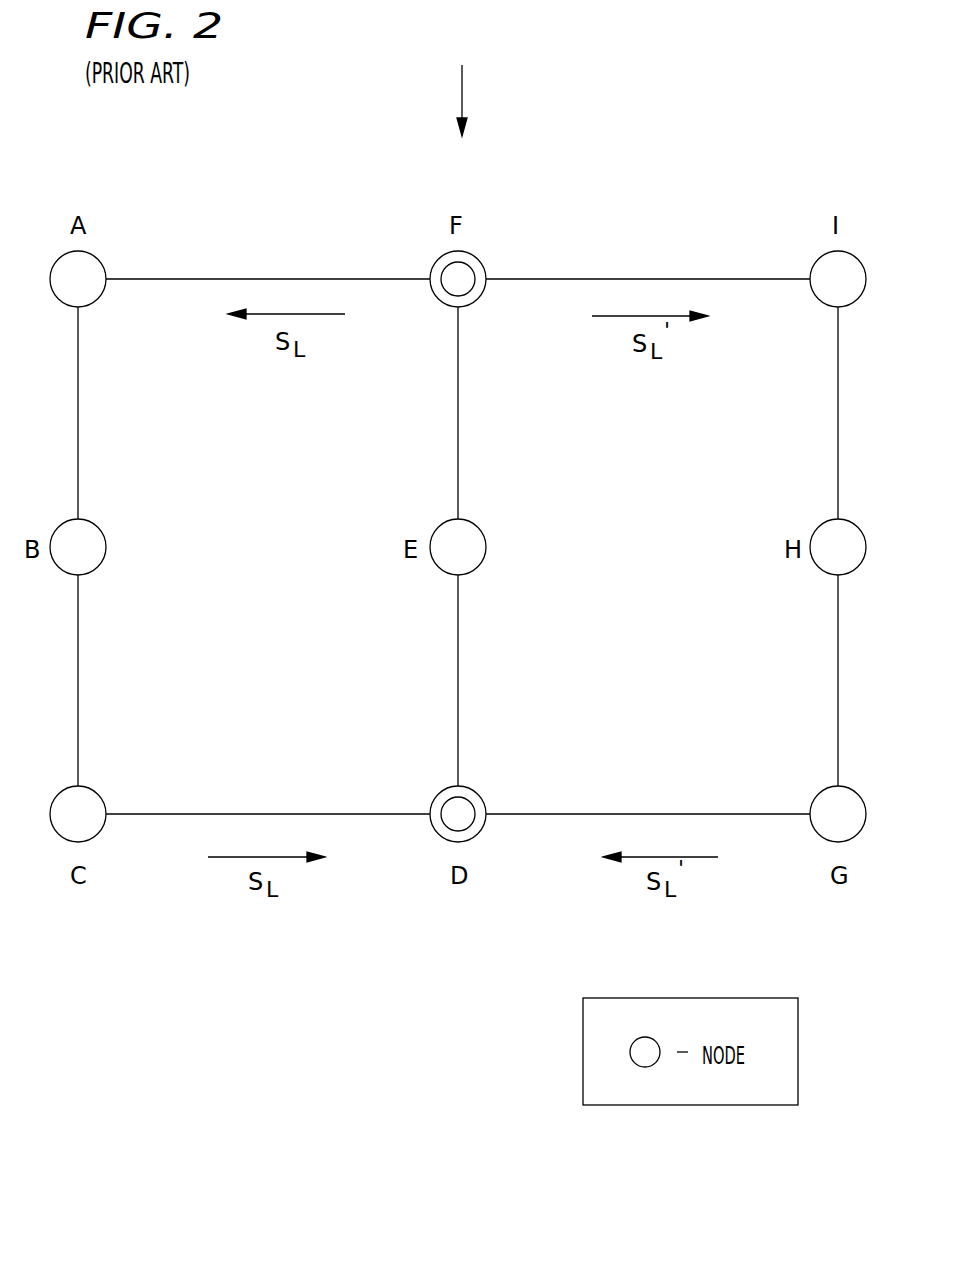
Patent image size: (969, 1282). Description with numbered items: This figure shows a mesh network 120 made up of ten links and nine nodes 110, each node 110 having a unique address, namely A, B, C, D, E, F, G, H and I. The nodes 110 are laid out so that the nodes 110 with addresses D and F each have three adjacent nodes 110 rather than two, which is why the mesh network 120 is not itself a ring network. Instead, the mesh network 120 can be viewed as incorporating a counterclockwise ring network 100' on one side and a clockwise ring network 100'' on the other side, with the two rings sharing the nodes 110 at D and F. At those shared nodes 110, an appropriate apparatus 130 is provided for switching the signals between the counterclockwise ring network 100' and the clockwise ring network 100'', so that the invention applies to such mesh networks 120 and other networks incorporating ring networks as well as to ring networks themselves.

The node 110 is at (100, 298).
The mesh network 120 is at (462, 85).
The apparatus 130 is at (478, 262).
The counterclockwise ring network 100' is at (282, 546).
The clockwise ring network 100'' is at (648, 546).